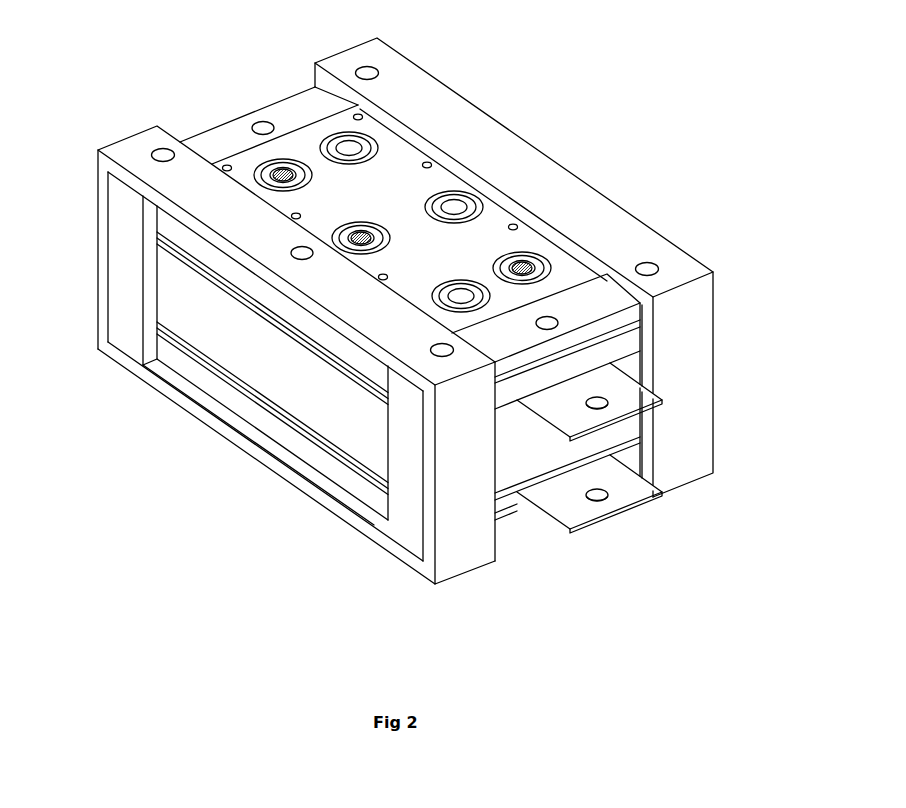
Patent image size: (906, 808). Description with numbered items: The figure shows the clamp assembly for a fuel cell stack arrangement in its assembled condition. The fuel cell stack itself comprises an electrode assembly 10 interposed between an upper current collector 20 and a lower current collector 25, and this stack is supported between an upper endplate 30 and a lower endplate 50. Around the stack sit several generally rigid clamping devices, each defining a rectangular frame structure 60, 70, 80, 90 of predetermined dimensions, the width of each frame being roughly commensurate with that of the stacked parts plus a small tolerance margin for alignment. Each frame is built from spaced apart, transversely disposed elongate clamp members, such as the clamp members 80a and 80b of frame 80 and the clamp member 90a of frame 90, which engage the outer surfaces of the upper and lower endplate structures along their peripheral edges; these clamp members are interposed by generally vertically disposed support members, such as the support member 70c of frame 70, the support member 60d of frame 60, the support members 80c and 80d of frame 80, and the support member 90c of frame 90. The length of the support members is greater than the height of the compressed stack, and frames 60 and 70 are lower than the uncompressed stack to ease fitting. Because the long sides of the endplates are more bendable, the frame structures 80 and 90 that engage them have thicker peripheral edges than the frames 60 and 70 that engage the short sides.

The electrode assembly 10 is at (288, 354).
The upper current collector 20 is at (183, 260).
The lower current collector 25 is at (352, 454).
The upper endplate 30 is at (165, 220).
The lower endplate 50 is at (374, 487).
The rectangular frame structure 60 is at (615, 310).
The support member 60d is at (407, 482).
The rectangular frame structure 70 is at (277, 126).
The support member 70c is at (132, 212).
The rectangular frame structure 80 is at (266, 384).
The elongate clamp member 80a is at (175, 188).
The elongate clamp member 80b is at (147, 388).
The support member 80c is at (100, 215).
The support member 80d is at (430, 560).
The rectangular frame structure 90 is at (558, 307).
The elongate clamp member 90a is at (567, 187).
The support member 90c is at (695, 397).